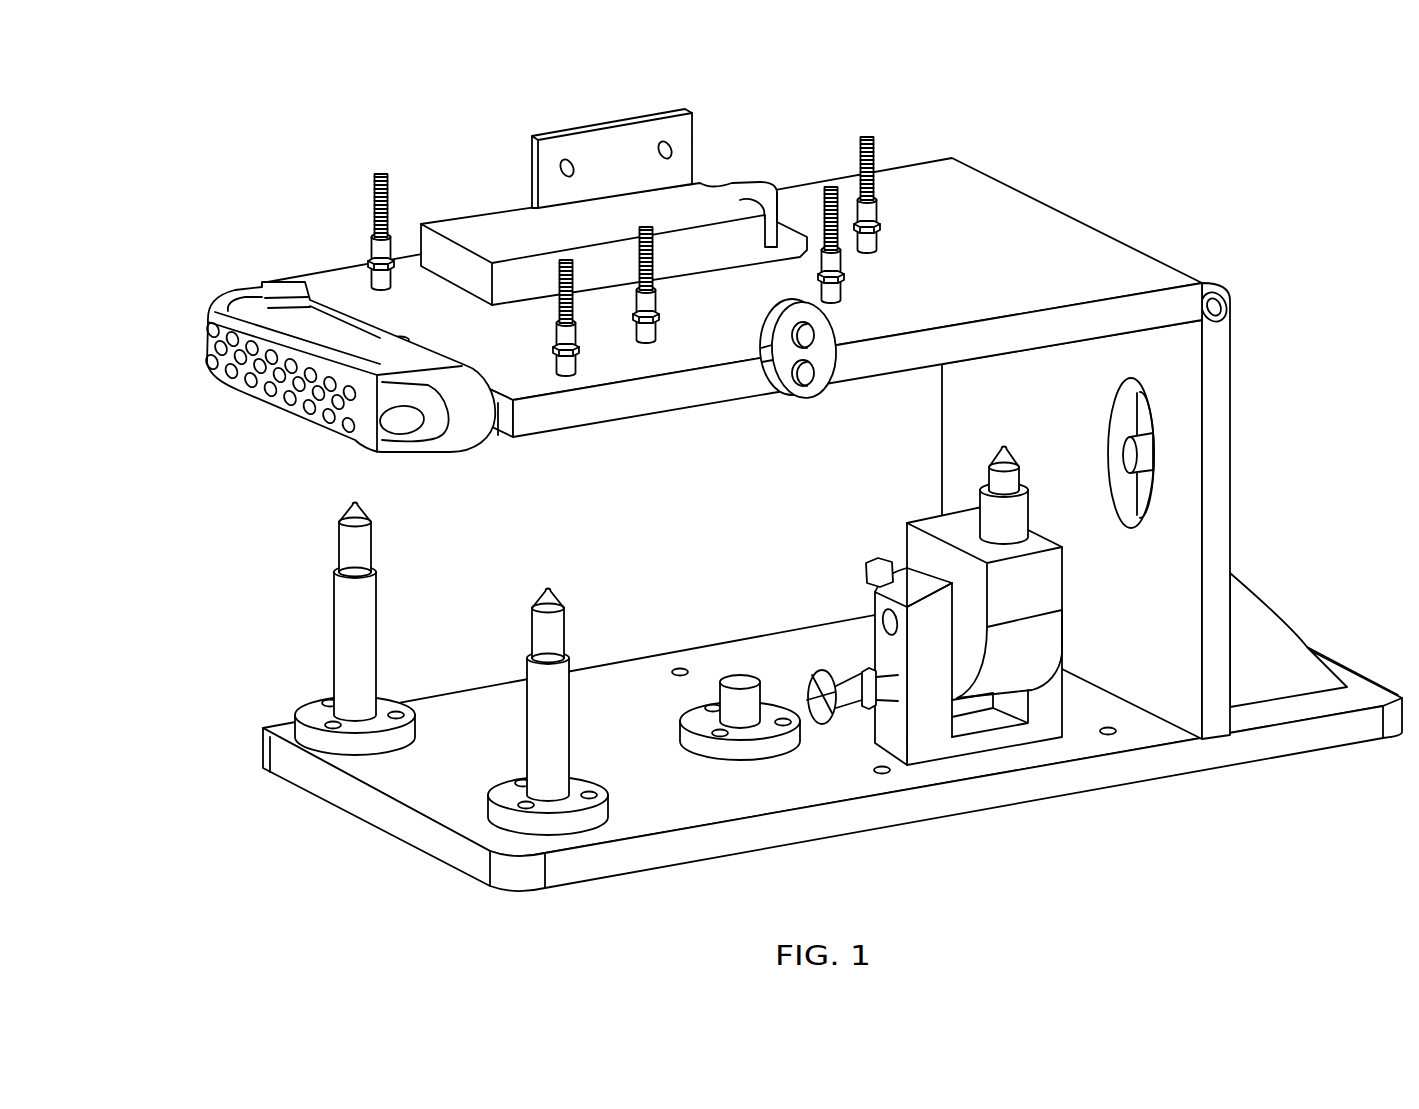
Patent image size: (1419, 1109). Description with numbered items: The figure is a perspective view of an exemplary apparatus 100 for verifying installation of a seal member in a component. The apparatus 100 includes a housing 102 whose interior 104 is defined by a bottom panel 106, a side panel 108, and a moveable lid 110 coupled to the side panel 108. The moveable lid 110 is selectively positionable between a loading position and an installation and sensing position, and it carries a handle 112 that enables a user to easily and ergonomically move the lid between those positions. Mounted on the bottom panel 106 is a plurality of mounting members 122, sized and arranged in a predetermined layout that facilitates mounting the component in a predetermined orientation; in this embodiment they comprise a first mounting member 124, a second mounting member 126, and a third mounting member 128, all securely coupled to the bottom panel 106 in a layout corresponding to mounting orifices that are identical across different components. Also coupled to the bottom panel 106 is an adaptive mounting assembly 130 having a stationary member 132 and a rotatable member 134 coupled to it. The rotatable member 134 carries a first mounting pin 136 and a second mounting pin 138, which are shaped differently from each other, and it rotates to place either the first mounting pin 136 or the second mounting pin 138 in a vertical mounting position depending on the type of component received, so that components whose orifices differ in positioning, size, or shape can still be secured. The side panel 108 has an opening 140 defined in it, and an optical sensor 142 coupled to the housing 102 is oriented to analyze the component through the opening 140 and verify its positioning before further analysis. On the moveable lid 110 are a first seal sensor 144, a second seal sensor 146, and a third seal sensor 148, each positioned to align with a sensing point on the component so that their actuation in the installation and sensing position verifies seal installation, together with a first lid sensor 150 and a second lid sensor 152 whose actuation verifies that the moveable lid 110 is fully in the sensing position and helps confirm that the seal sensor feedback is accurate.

The apparatus 100 is at (753, 496).
The housing 102 is at (729, 280).
The interior 104 is at (801, 597).
The bottom panel 106 is at (460, 868).
The side panel 108 is at (1132, 511).
The moveable lid 110 is at (996, 196).
The handle 112 is at (204, 342).
The plurality of mounting members 122 is at (548, 689).
The first mounting member 124 is at (296, 716).
The second mounting member 126 is at (608, 808).
The third mounting member 128 is at (782, 756).
The adaptive mounting assembly 130 is at (991, 629).
The stationary member 132 is at (983, 753).
The rotatable member 134 is at (935, 525).
The first mounting pin 136 is at (986, 478).
The second mounting pin 138 is at (893, 558).
The opening 140 is at (1128, 488).
The optical sensor 142 is at (1145, 450).
The first seal sensor 144 is at (880, 228).
The second seal sensor 146 is at (843, 279).
The third seal sensor 148 is at (657, 320).
The first lid sensor 150 is at (372, 267).
The second lid sensor 152 is at (577, 352).